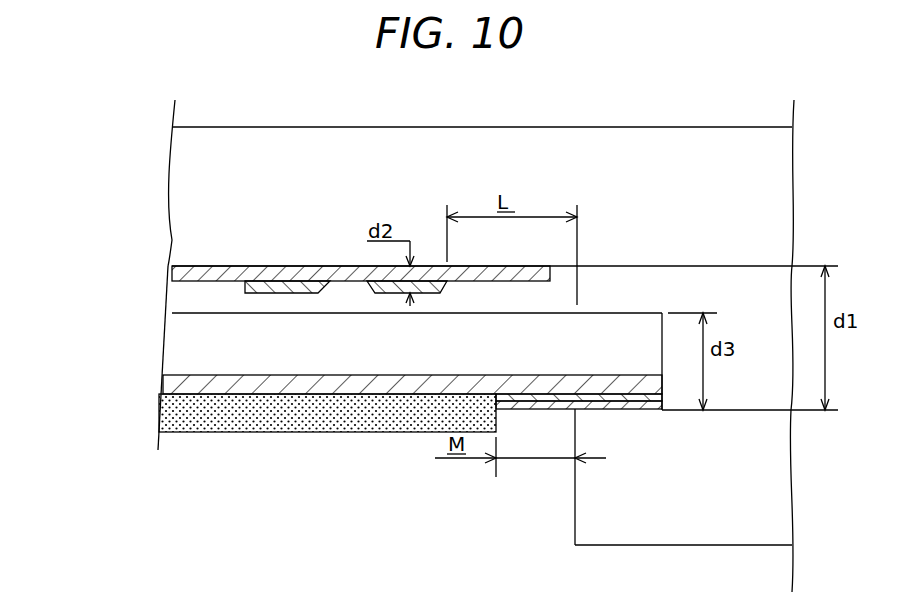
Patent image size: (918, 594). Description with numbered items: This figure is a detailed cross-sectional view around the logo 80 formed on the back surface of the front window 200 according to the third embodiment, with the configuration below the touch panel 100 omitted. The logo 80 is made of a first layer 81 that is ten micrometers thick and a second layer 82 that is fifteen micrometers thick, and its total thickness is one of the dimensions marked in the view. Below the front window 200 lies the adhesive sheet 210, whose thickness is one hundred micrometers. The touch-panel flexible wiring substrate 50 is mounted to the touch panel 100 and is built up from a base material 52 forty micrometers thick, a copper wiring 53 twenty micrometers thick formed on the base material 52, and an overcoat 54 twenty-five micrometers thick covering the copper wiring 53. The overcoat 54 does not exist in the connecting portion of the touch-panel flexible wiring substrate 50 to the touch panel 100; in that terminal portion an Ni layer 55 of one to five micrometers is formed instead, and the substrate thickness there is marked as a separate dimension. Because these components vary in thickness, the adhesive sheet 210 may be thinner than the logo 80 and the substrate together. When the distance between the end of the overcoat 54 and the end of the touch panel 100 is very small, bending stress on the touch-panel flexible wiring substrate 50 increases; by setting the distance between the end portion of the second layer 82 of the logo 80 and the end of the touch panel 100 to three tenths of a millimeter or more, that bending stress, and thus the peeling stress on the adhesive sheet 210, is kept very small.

The touch-panel flexible wiring substrate 50 is at (88, 337).
The base material 52 is at (166, 350).
The copper wiring 53 is at (166, 381).
The overcoat 54 is at (162, 417).
The Ni layer 55 is at (565, 402).
The logo 80 is at (88, 255).
The first layer 81 is at (166, 272).
The second layer 82 is at (162, 301).
The touch panel 100 is at (760, 489).
The front window 200 is at (762, 197).
The adhesive sheet 210 is at (757, 352).